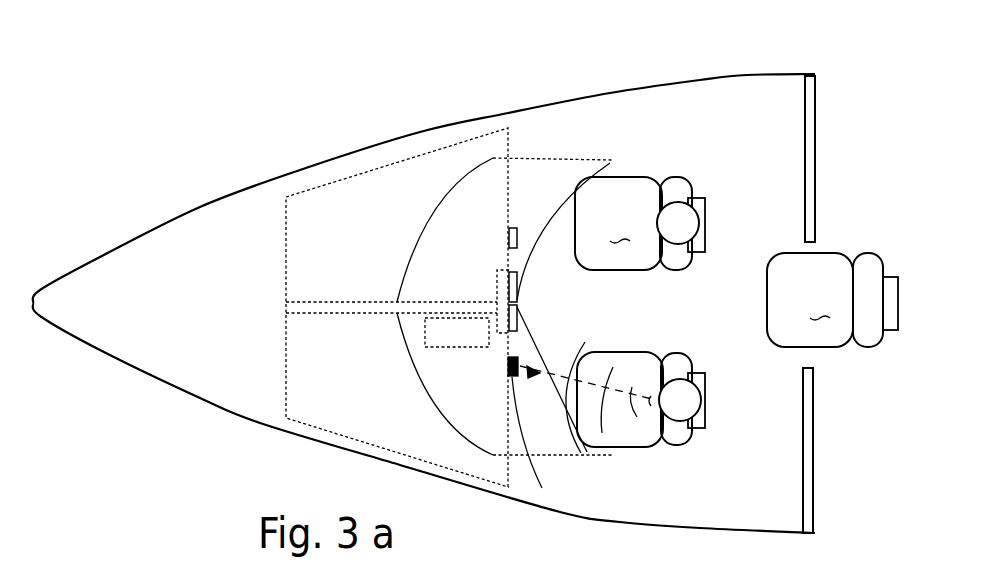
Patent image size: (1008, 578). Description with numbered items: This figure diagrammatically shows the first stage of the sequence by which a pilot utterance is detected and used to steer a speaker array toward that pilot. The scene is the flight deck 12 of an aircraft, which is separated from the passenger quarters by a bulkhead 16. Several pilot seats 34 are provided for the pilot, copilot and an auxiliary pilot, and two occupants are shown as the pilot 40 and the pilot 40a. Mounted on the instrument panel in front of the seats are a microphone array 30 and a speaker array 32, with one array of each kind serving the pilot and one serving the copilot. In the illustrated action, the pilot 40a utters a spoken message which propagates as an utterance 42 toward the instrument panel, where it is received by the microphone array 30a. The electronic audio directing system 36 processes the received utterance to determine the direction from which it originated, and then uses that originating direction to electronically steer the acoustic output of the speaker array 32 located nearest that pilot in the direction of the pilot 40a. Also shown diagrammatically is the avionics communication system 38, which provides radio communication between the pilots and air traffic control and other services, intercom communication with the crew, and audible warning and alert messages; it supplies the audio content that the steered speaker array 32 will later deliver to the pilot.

The flight deck 12 is at (640, 124).
The bulkhead 16 is at (810, 163).
The microphone array 30 is at (514, 228).
The microphone array 30a is at (519, 378).
The speaker array 32 is at (517, 288).
The pilot seat 34 is at (650, 362).
The audio directing system 36 is at (497, 286).
The avionics communication system 38 is at (455, 348).
The pilot 40 is at (677, 213).
The pilot 40a is at (677, 410).
The utterance 42 is at (618, 390).